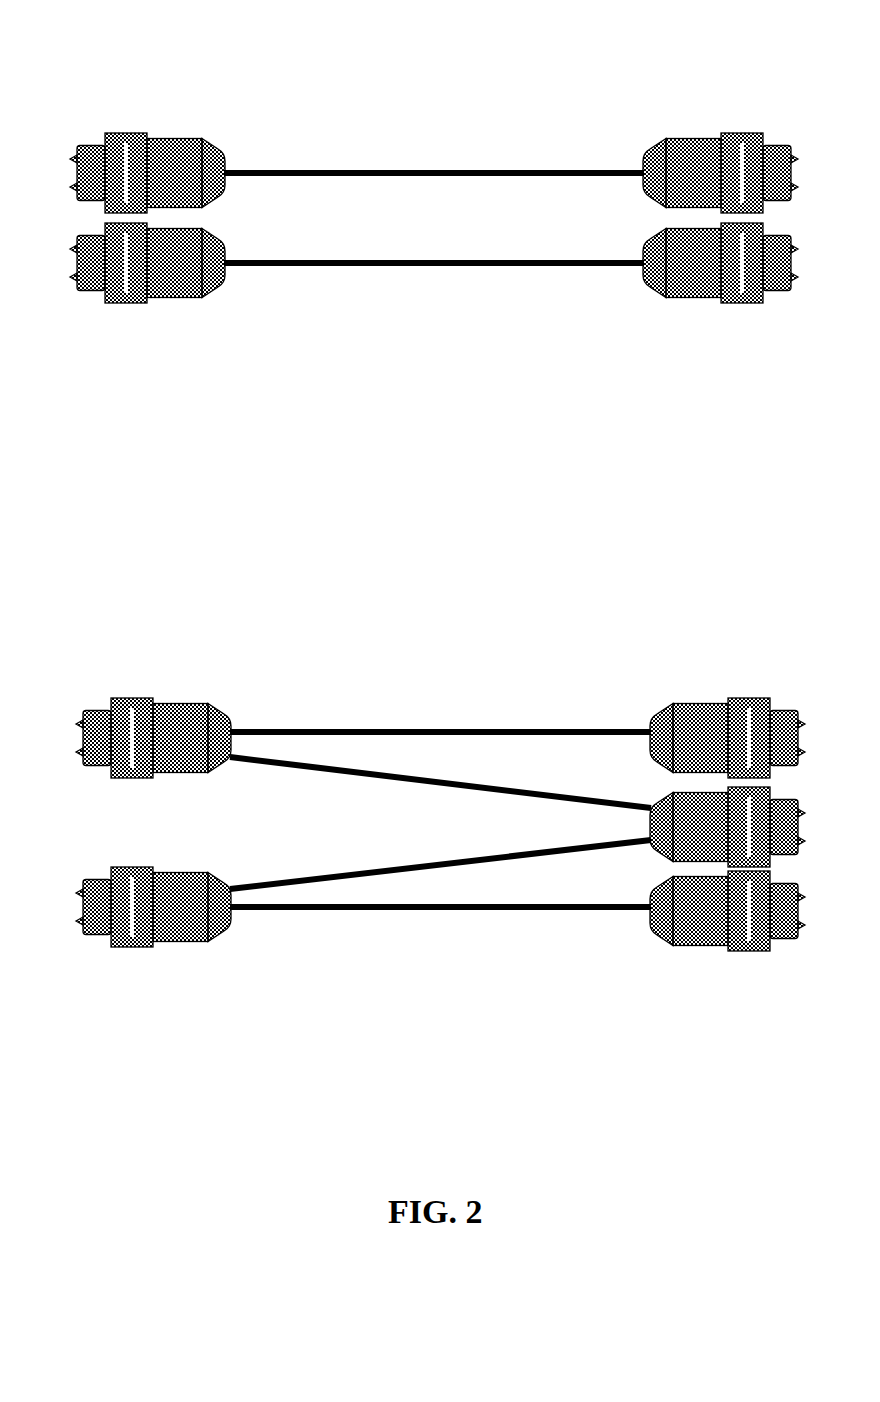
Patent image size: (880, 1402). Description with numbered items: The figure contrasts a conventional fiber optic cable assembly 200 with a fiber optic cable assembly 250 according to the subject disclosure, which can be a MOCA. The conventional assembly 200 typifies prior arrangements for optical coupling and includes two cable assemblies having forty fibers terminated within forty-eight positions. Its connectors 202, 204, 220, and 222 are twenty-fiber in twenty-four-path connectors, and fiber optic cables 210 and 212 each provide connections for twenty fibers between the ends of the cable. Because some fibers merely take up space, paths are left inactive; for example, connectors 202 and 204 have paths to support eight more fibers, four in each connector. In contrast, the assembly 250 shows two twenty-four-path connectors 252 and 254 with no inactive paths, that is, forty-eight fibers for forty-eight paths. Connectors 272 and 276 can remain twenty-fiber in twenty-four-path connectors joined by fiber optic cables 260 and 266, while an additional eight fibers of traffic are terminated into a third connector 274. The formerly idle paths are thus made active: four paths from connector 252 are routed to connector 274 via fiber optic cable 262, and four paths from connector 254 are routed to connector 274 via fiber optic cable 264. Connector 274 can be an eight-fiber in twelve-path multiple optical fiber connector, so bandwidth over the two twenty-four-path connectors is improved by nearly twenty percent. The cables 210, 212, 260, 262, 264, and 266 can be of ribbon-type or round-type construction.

The fiber optic cable assembly 200 is at (275, 58).
The connector 202 is at (204, 205).
The connector 204 is at (204, 295).
The fiber optic cable 210 is at (437, 170).
The fiber optic cable 212 is at (432, 267).
The connector 220 is at (668, 205).
The connector 222 is at (668, 295).
The fiber optic cable assembly 250 is at (200, 580).
The connector 252 is at (206, 775).
The connector 254 is at (206, 944).
The fiber optic cable 260 is at (440, 732).
The fiber optic cable 262 is at (545, 797).
The fiber optic cable 264 is at (318, 877).
The fiber optic cable 266 is at (440, 910).
The connector 272 is at (676, 774).
The third connector 274 is at (676, 862).
The connector 276 is at (676, 947).